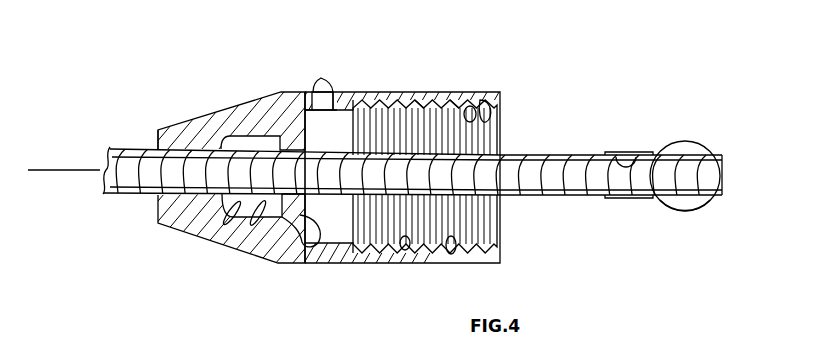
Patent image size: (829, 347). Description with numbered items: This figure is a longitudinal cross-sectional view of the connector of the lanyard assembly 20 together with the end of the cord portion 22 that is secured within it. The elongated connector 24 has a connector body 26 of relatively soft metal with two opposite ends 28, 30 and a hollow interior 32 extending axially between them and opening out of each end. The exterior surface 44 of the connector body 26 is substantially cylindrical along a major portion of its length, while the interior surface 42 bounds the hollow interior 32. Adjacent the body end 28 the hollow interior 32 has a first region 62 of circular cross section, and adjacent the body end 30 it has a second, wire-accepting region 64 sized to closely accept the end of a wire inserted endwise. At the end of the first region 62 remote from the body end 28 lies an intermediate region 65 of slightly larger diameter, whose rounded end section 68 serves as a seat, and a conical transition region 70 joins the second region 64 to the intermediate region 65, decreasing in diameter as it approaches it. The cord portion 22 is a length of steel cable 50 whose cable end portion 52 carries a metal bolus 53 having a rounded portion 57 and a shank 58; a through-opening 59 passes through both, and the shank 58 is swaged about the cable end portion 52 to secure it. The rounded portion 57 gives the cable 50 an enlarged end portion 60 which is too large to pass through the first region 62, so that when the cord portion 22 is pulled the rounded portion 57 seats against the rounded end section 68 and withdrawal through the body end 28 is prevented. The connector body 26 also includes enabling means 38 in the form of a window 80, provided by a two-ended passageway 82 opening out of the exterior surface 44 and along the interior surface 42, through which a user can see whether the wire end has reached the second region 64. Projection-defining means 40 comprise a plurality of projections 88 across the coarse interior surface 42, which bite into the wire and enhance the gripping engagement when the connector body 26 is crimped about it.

The lanyard assembly 20 is at (209, 82).
The cord portion 22 is at (157, 150).
The connector 24 is at (453, 92).
The connector body 26 is at (372, 92).
The body end 28 is at (158, 224).
The body end 30 is at (503, 258).
The hollow interior 32 is at (456, 256).
The enabling means 38 is at (285, 58).
The projection-defining means 40 is at (534, 242).
The interior surface 42 is at (497, 100).
The exterior surface 44 is at (420, 92).
The steel cable 50 is at (143, 194).
The cable end portion 52 is at (537, 153).
The metal bolus 53 is at (696, 141).
The rounded portion 57 is at (687, 212).
The shank 58 is at (636, 198).
The through-opening 59 is at (622, 158).
The enlarged end portion 60 is at (712, 153).
The first region 62 is at (157, 147).
The second region 64 is at (503, 110).
The intermediate region 65 is at (250, 228).
The rounded end section 68 is at (217, 232).
The transition region 70 is at (310, 248).
The window 80 is at (318, 78).
The passageway 82 is at (330, 80).
The projections 88 is at (403, 257).